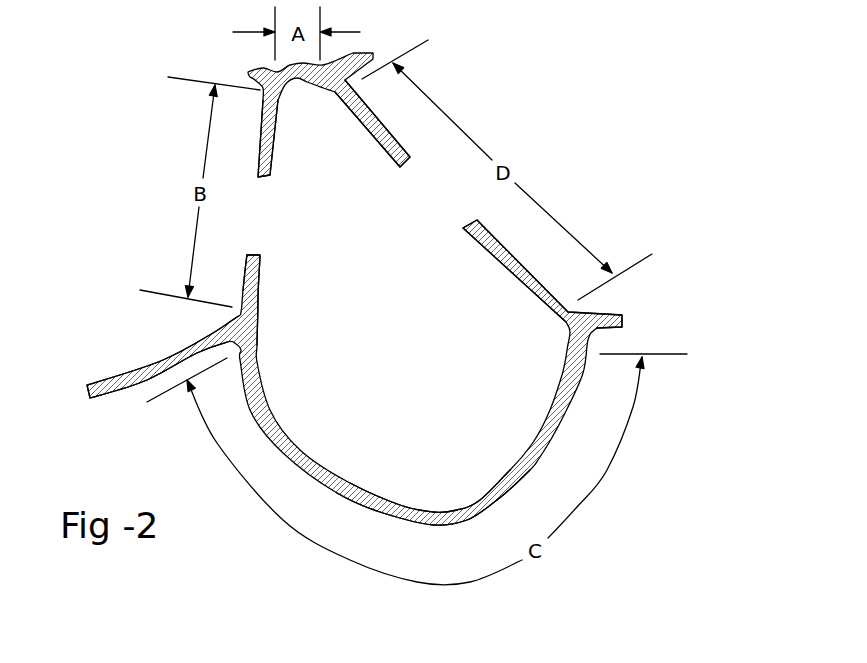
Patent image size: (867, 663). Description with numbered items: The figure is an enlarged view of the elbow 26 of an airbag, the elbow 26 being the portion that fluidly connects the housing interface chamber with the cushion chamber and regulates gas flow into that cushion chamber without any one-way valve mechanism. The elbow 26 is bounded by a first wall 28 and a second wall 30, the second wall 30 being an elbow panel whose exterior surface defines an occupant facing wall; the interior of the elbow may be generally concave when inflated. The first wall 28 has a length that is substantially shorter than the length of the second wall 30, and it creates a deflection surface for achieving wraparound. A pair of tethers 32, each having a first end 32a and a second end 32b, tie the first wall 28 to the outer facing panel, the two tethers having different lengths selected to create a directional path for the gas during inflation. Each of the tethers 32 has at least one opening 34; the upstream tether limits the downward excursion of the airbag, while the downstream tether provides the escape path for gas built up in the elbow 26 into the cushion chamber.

The elbow 26 is at (572, 433).
The first wall 28 is at (300, 80).
The second wall 30 is at (518, 462).
The tethers 32 is at (259, 292).
The first end 32a is at (277, 155).
The second end 32b is at (258, 366).
The opening 34 is at (447, 207).